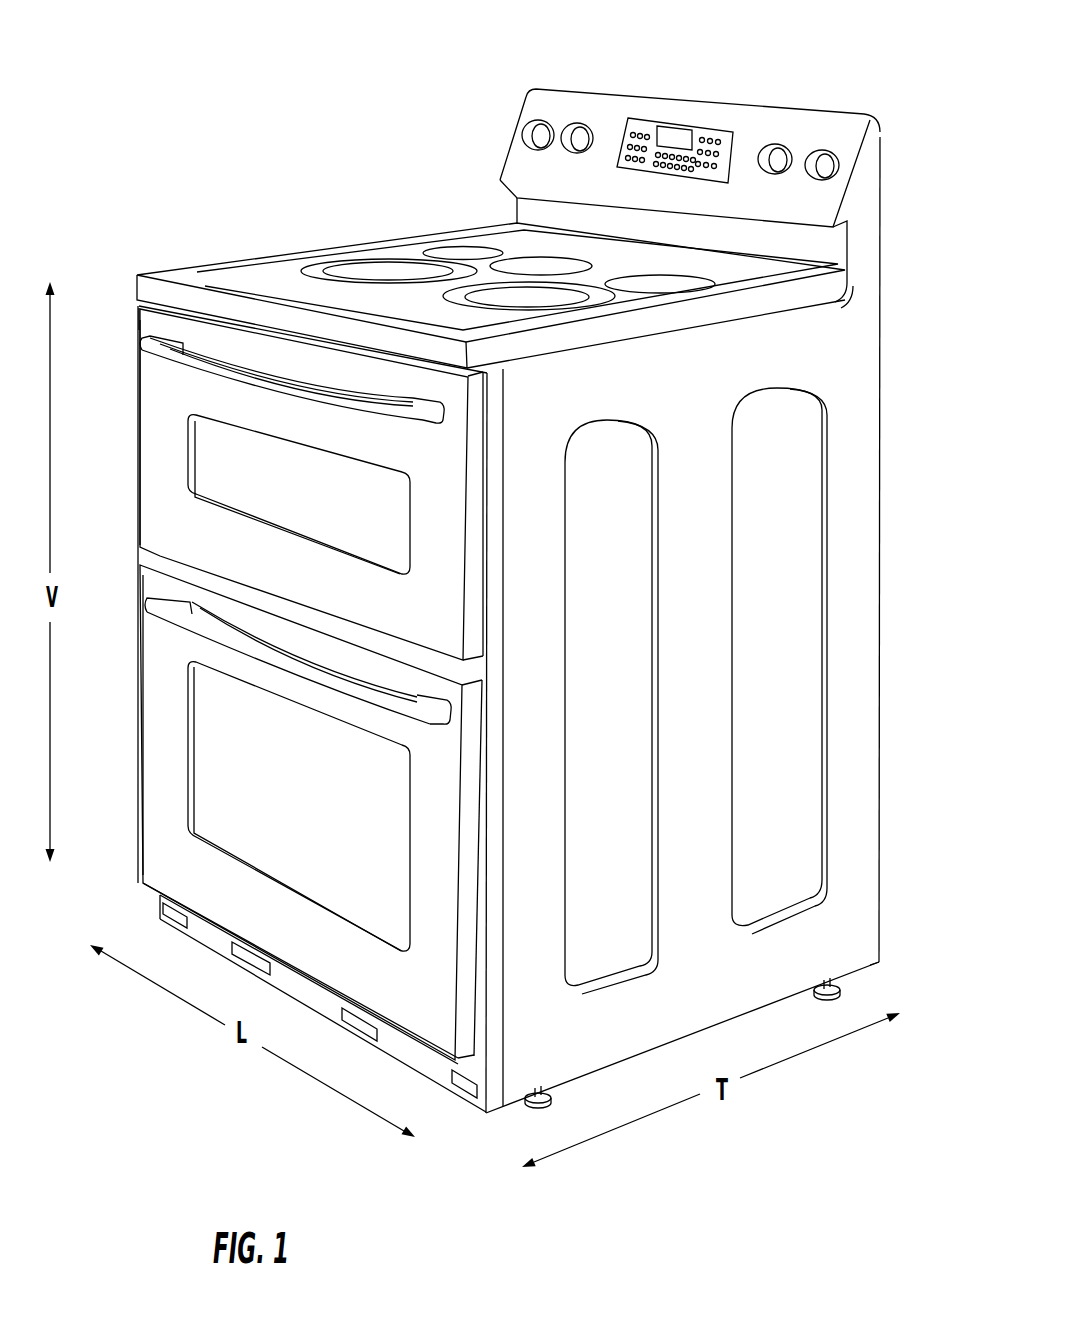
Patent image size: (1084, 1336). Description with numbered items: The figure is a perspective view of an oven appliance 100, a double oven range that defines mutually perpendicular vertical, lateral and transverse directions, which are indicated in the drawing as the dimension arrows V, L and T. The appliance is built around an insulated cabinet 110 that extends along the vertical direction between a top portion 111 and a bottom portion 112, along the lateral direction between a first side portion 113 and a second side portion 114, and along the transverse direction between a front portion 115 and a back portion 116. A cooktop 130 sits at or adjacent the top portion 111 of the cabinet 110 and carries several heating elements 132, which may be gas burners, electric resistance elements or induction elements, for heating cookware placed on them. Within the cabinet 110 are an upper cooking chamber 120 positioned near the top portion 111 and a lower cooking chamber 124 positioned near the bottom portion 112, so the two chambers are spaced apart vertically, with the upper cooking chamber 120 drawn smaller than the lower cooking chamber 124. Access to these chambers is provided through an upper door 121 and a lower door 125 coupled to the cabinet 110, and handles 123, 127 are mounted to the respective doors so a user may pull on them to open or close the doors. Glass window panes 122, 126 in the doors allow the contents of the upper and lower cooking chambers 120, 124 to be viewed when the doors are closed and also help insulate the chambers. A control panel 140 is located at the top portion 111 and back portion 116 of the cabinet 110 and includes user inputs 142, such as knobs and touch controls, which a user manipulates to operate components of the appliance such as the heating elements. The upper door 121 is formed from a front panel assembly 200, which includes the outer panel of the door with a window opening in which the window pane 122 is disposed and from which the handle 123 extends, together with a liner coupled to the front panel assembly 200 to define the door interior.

The oven appliance 100 is at (133, 170).
The cabinet 110 is at (870, 653).
The top portion 111 is at (898, 297).
The bottom portion 112 is at (888, 925).
The first side portion 113 is at (460, 1113).
The second side portion 114 is at (153, 917).
The front portion 115 is at (478, 1130).
The back portion 116 is at (867, 981).
The upper cooking chamber 120 is at (138, 517).
The upper door 121 is at (150, 442).
The glass window pane 122 is at (463, 533).
The handle 123 is at (463, 448).
The lower cooking chamber 124 is at (138, 658).
The lower door 125 is at (158, 762).
The glass window pane 126 is at (363, 852).
The handle 127 is at (338, 692).
The cooktop 130 is at (180, 274).
The heating elements 132 is at (380, 263).
The control panel 140 is at (783, 127).
The user inputs 142 is at (523, 123).
The front panel assembly 200 is at (152, 321).